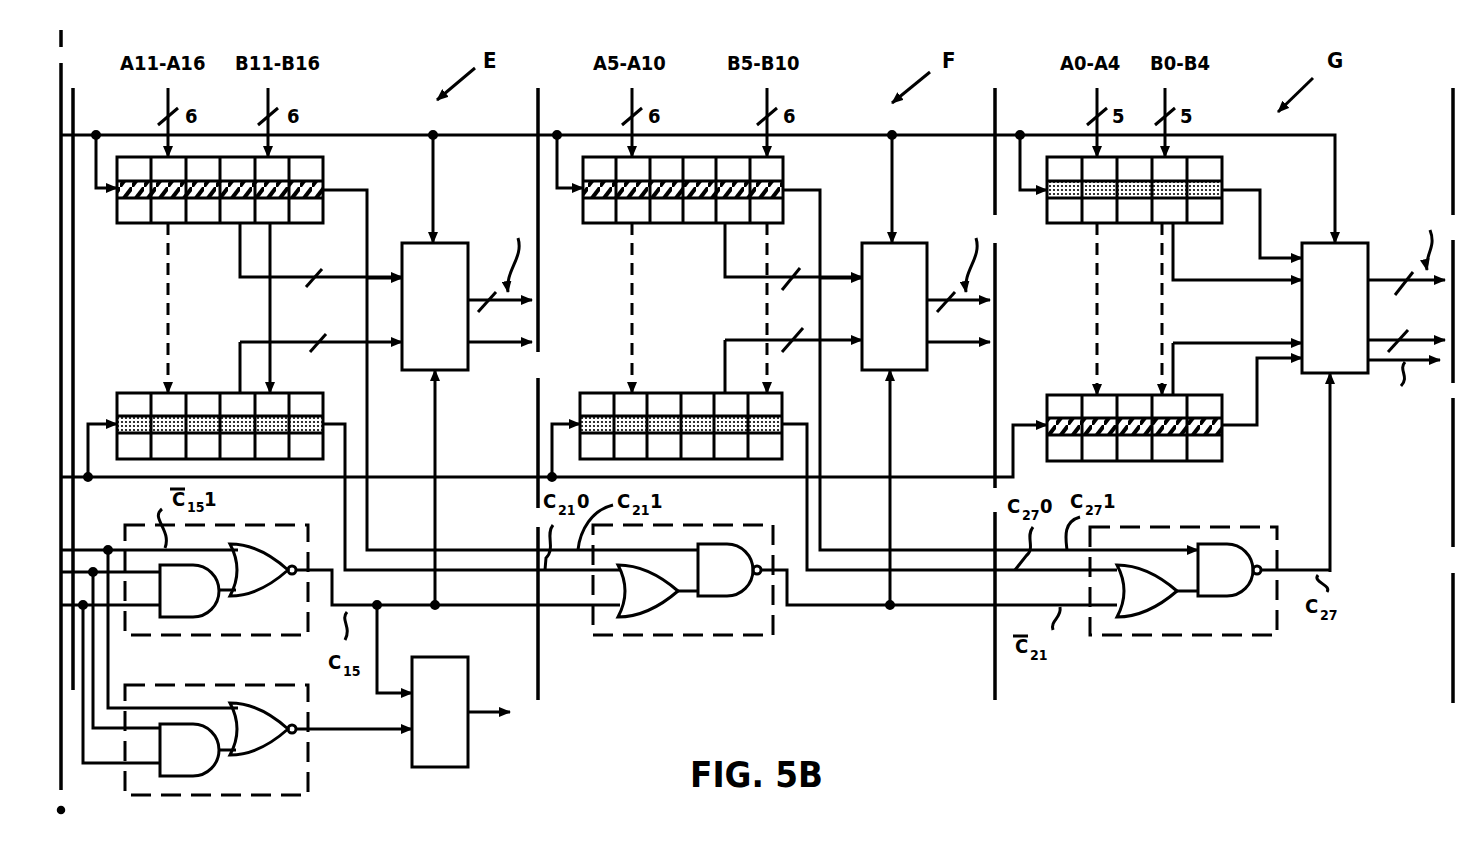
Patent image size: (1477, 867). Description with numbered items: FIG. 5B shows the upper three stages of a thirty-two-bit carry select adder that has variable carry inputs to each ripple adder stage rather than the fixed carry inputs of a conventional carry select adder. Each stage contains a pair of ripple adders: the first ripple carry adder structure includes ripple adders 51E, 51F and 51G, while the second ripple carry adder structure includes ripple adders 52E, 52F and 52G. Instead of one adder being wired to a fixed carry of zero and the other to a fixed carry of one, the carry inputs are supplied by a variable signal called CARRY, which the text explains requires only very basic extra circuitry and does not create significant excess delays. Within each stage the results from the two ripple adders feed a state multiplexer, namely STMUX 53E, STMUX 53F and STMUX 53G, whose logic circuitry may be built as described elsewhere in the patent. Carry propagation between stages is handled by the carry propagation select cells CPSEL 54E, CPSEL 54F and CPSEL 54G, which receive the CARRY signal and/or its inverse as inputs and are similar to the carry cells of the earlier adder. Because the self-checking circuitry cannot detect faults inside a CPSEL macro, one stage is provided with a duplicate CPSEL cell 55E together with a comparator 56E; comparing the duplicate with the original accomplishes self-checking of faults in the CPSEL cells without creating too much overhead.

The ripple adder 51E is at (323, 172).
The ripple adder 52E is at (340, 386).
The STMUX 53E is at (449, 242).
The CPSEL cell 54E is at (243, 637).
The CPSEL cell 55E is at (308, 783).
The comparator 56E is at (455, 760).
The ripple adder 51F is at (785, 174).
The ripple adder 52F is at (782, 400).
The STMUX 53F is at (907, 243).
The CPSEL cell 54F is at (698, 638).
The ripple adder 51G is at (1222, 172).
The ripple adder 52G is at (1230, 375).
The STMUX 53G is at (1345, 241).
The CPSEL cell 54G is at (1198, 638).